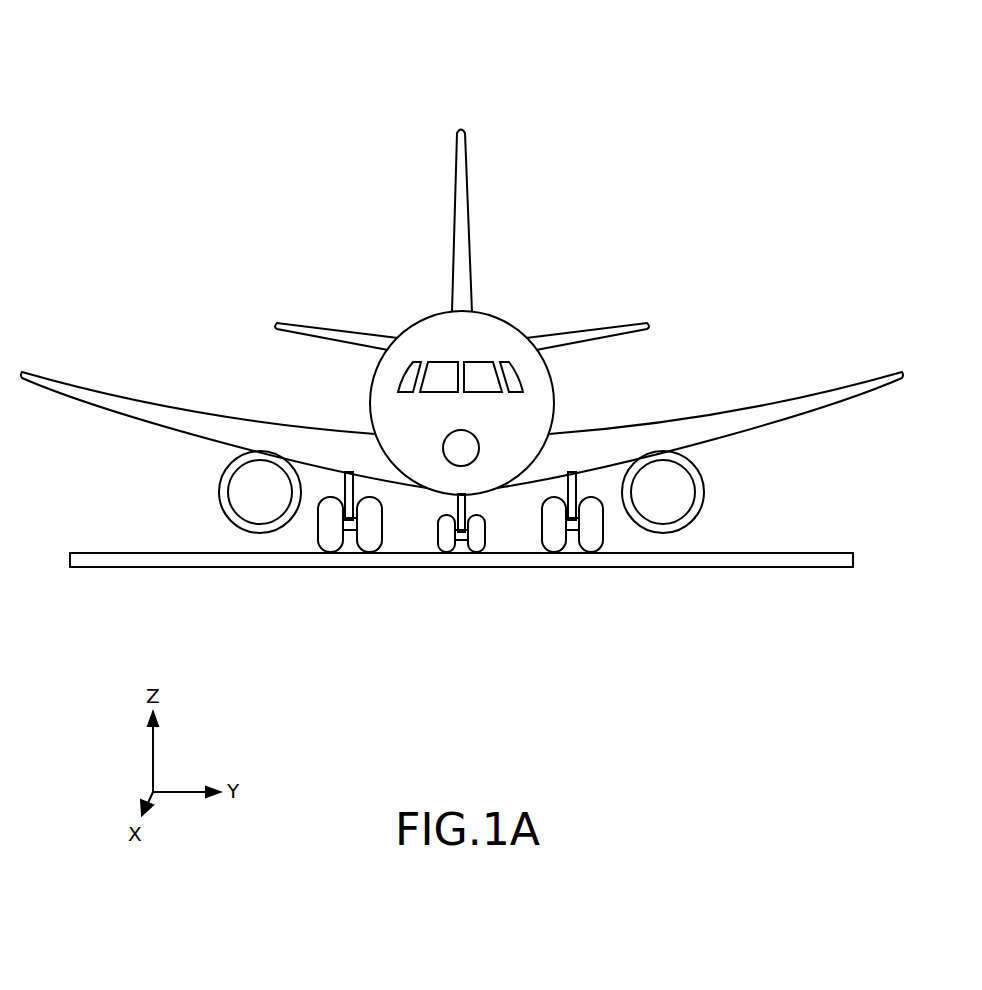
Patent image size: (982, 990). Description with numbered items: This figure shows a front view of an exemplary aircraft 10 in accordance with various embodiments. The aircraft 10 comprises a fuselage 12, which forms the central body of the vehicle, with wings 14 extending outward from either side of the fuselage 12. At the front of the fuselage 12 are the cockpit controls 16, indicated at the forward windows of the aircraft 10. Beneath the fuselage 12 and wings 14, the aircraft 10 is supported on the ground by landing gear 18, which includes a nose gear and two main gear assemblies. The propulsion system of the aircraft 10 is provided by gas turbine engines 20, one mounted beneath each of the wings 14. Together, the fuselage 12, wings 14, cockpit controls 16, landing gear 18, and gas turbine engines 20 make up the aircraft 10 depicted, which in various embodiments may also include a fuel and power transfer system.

The aircraft 10 is at (338, 206).
The fuselage 12 is at (500, 319).
The wings 14 is at (685, 421).
The cockpit controls 16 is at (560, 364).
The landing gear 18 is at (620, 540).
The gas turbine engines 20 is at (704, 492).